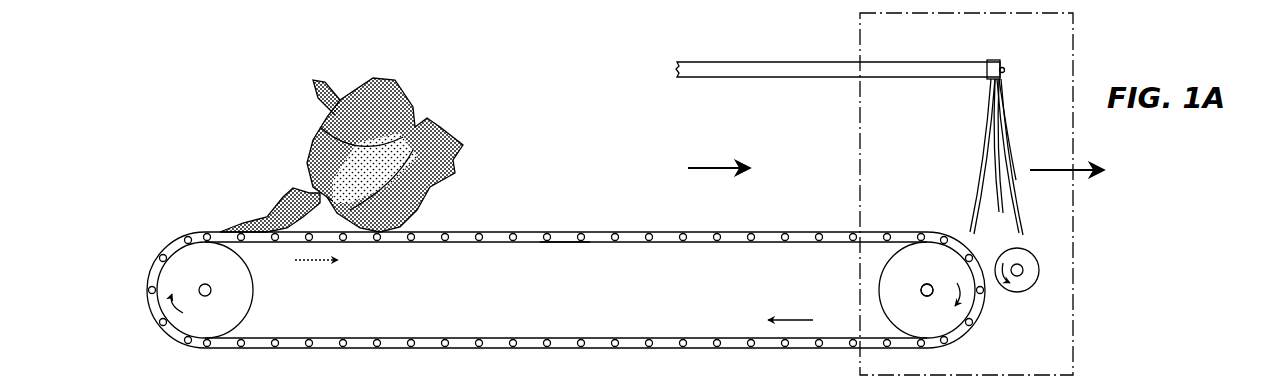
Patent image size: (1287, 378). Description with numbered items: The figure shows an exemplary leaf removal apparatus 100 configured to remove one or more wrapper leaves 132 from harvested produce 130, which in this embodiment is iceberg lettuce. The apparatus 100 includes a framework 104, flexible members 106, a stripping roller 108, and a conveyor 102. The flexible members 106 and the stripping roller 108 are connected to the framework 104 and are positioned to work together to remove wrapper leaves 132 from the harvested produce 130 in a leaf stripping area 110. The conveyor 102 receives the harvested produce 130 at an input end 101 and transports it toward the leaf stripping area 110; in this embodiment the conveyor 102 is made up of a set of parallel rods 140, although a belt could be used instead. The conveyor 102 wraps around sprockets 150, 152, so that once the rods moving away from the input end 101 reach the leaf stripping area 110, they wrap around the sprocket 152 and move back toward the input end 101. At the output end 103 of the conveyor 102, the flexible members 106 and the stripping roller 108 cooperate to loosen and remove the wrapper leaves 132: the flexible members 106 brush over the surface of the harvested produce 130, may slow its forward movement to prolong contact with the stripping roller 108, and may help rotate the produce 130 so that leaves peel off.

The leaf removal apparatus 100 is at (590, 78).
The input end 101 is at (165, 252).
The conveyor 102 is at (768, 243).
The output end 103 is at (966, 243).
The framework 104 is at (795, 62).
The flexible members 106 is at (1003, 115).
The stripping roller 108 is at (1027, 262).
The leaf stripping area 110 is at (860, 55).
The harvested produce 130 is at (407, 133).
The wrapper leaves 132 is at (375, 80).
The parallel rods 140 is at (580, 233).
The sprocket 150 is at (240, 297).
The sprocket 152 is at (885, 292).